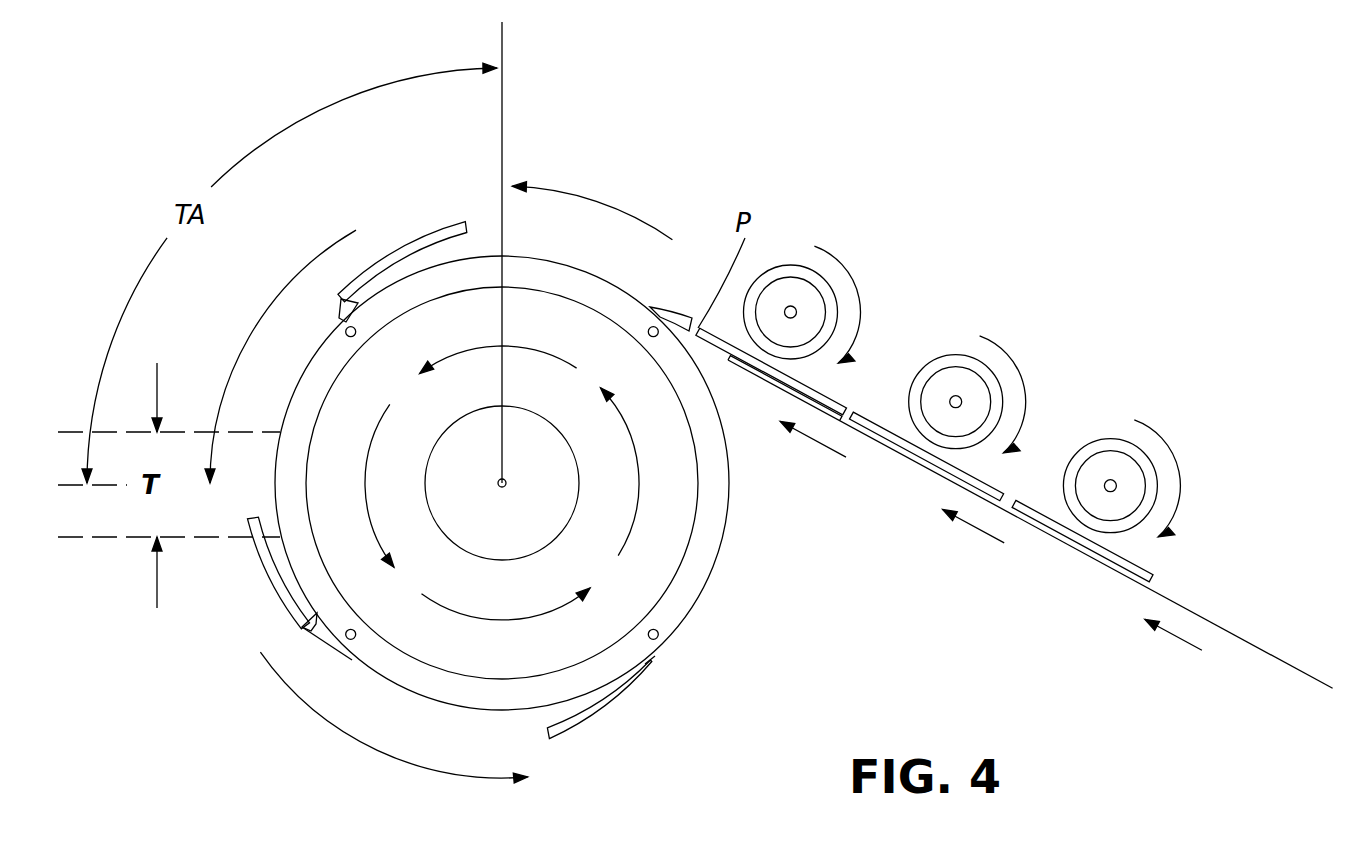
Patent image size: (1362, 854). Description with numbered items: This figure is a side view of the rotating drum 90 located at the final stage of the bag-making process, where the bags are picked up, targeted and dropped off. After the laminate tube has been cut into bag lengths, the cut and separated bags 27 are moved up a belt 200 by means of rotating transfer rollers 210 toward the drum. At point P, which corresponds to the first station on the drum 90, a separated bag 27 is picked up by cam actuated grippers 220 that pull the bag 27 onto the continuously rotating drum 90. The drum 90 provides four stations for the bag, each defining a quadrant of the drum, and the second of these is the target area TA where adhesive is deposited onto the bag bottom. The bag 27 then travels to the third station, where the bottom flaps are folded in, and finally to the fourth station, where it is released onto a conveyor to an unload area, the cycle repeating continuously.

The drum 90 is at (722, 540).
The cam actuated grippers 220 is at (340, 312).
The bag 27 is at (426, 237).
The rotating transfer rollers 210 is at (957, 352).
The belt 200 is at (1230, 627).